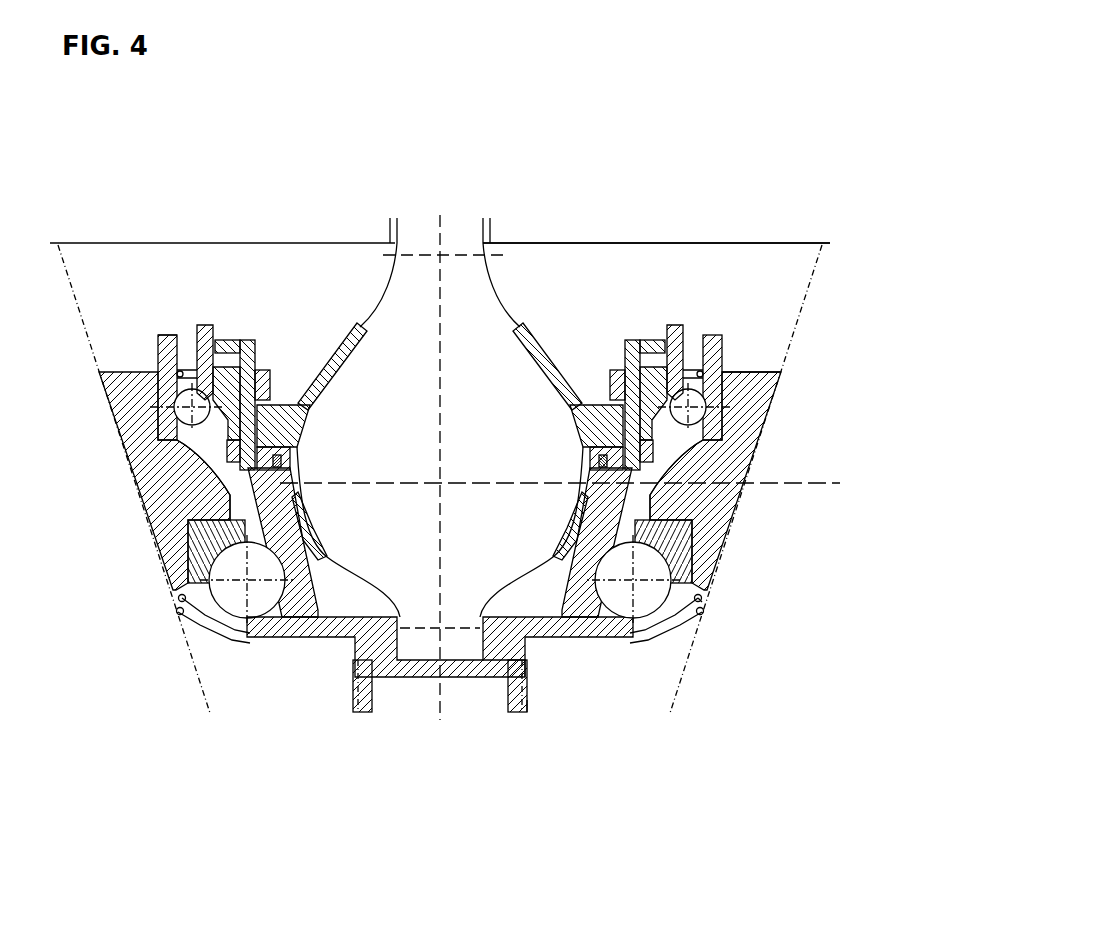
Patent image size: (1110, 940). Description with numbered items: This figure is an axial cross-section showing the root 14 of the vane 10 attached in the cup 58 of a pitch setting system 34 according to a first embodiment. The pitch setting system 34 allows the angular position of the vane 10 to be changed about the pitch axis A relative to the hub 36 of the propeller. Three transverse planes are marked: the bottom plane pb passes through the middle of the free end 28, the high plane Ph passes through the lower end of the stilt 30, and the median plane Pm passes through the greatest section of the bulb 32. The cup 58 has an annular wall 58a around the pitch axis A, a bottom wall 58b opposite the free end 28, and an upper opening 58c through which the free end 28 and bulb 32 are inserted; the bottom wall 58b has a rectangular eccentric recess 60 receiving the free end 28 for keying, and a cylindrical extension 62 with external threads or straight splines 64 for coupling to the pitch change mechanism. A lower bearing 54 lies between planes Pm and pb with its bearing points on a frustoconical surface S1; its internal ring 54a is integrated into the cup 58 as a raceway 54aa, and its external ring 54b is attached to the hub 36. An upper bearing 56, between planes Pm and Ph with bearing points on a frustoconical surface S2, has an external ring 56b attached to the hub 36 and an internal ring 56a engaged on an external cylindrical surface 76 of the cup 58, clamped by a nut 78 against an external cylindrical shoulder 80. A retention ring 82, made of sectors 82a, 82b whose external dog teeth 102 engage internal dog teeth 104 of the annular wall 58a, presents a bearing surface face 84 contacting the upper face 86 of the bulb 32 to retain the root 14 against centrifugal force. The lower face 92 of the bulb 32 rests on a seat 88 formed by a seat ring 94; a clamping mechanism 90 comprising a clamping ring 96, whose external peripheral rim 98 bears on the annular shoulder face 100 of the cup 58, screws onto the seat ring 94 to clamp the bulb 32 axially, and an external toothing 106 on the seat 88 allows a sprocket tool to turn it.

The vane 10 is at (527, 228).
The root 14 is at (495, 388).
The free end 28 is at (455, 650).
The stilt 30 is at (417, 273).
The bulb 32 is at (720, 530).
The pitch setting system 34 is at (840, 484).
The hub 36 is at (177, 497).
The lower bearing 54 is at (712, 578).
The internal ring of lower bearing 54a is at (598, 640).
The external ring of lower bearing 54b is at (703, 573).
The raceway 54aa is at (648, 618).
The upper bearing 56 is at (722, 405).
The internal ring of upper bearing 56a is at (670, 343).
The external ring of upper bearing 56b is at (713, 337).
The cup 58 is at (282, 620).
The annular wall 58a is at (197, 583).
The bottom wall 58b is at (508, 668).
The opening 58c is at (253, 340).
The recess 60 is at (405, 650).
The cylindrical extension 62 is at (528, 700).
The external threads or external straight splines 64 is at (528, 683).
The external cylindrical surface 76 is at (650, 458).
The nut 78 is at (677, 327).
The external cylindrical shoulder 80 is at (545, 490).
The retention ring 82 is at (327, 380).
The sector of retention ring 82a is at (207, 336).
The sector of retention ring 82b is at (608, 370).
The bearing surface face 84 is at (347, 373).
The upper face of the bulb 86 is at (300, 405).
The seat 88 is at (290, 533).
The clamping mechanism 90 is at (230, 495).
The lower face of the bulb 92 is at (322, 620).
The seat ring 94 is at (283, 558).
The clamping ring 96 is at (297, 455).
The external peripheral rim 98 is at (178, 372).
The annular shoulder face 100 is at (173, 407).
The external dog tooth 102 is at (160, 357).
The internal dog teeth 104 is at (185, 350).
The external toothing 106 is at (648, 340).
The pitch axis A is at (440, 702).
The high plane Ph is at (447, 255).
The median plane Pm is at (377, 470).
The bottom plane pb is at (493, 627).
The frustoconical surface S1 is at (675, 600).
The frustoconical surface S2 is at (723, 372).